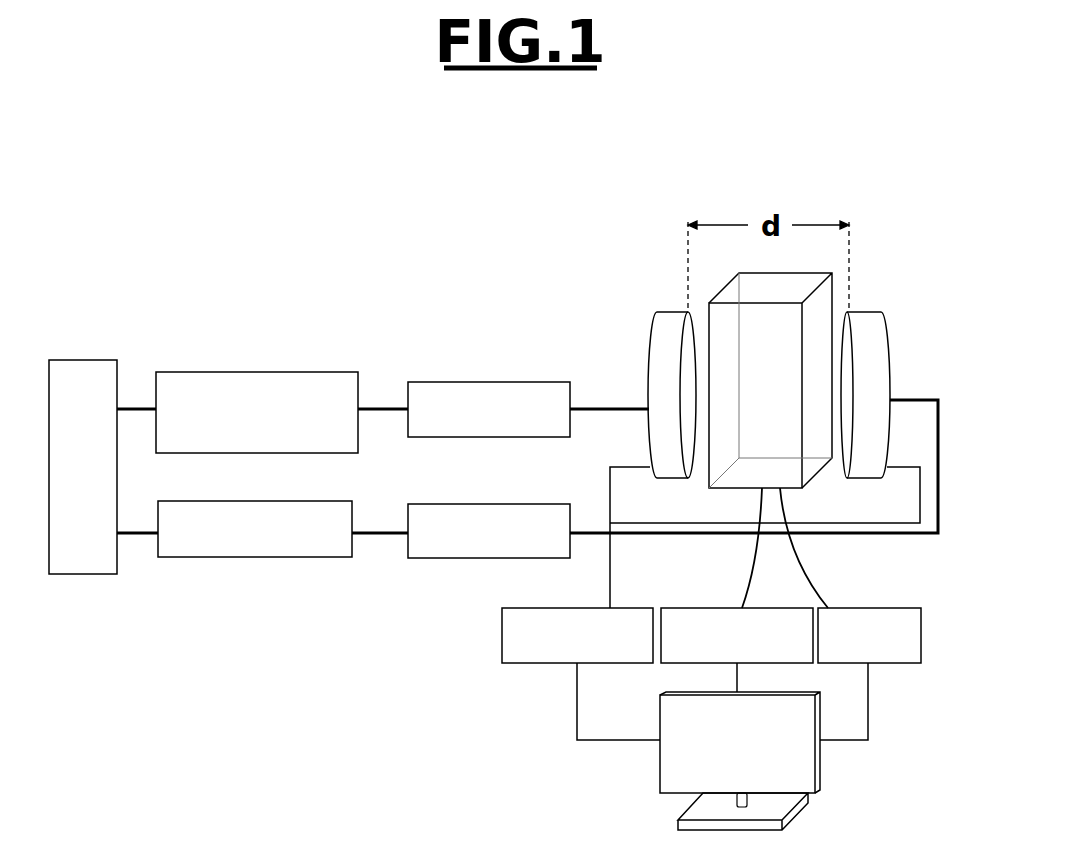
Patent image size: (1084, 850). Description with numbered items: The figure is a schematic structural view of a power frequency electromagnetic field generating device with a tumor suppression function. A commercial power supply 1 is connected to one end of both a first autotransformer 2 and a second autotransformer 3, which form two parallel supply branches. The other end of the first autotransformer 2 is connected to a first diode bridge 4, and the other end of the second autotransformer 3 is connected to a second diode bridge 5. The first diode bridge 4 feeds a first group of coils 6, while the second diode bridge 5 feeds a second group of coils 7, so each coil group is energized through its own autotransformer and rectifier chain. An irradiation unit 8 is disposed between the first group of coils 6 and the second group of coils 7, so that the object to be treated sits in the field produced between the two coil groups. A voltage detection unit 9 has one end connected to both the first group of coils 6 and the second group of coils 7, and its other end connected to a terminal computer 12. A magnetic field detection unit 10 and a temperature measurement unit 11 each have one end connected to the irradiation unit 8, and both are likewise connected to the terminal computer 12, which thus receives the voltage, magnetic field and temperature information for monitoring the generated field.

The commercial power supply 1 is at (102, 359).
The first autotransformer 2 is at (208, 372).
The second autotransformer 3 is at (220, 558).
The first diode bridge 4 is at (453, 381).
The second diode bridge 5 is at (433, 559).
The first group of coils 6 is at (657, 312).
The second group of coils 7 is at (878, 312).
The irradiation unit 8 is at (793, 323).
The voltage detection unit 9 is at (515, 664).
The magnetic field detection unit 10 is at (673, 664).
The temperature measurement unit 11 is at (883, 664).
The terminal computer 12 is at (805, 780).